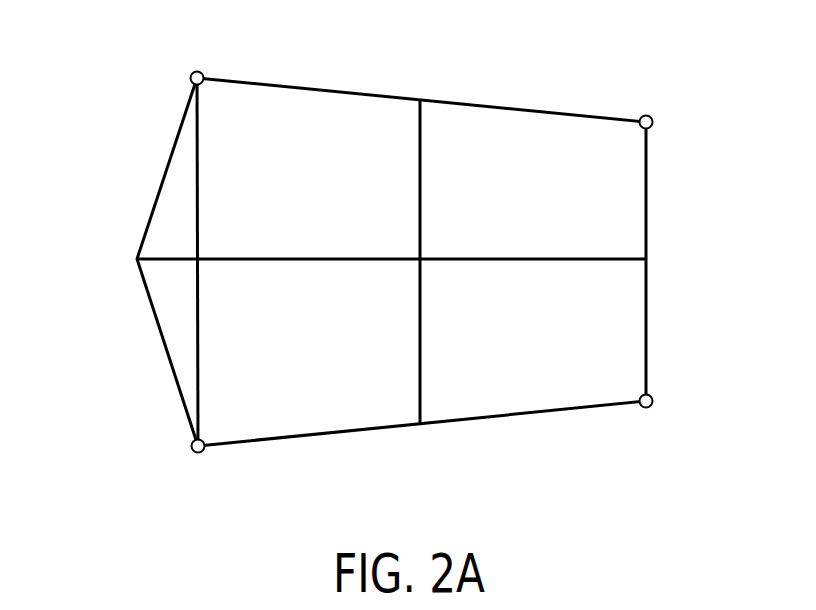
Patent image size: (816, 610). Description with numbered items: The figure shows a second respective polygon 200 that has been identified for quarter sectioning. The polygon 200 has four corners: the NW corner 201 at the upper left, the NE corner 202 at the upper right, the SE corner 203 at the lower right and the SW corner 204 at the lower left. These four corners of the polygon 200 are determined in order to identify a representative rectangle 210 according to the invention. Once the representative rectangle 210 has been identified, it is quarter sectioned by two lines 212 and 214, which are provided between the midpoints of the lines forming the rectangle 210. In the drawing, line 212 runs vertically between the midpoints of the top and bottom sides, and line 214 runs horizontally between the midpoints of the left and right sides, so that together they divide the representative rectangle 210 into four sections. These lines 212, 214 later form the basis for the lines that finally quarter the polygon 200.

The polygon 200 is at (148, 213).
The NW corner 201 is at (197, 71).
The NE corner 202 is at (645, 115).
The SE corner 203 is at (647, 408).
The SW corner 204 is at (194, 453).
The representative rectangle 210 is at (199, 346).
The line 212 is at (420, 178).
The line 214 is at (509, 258).